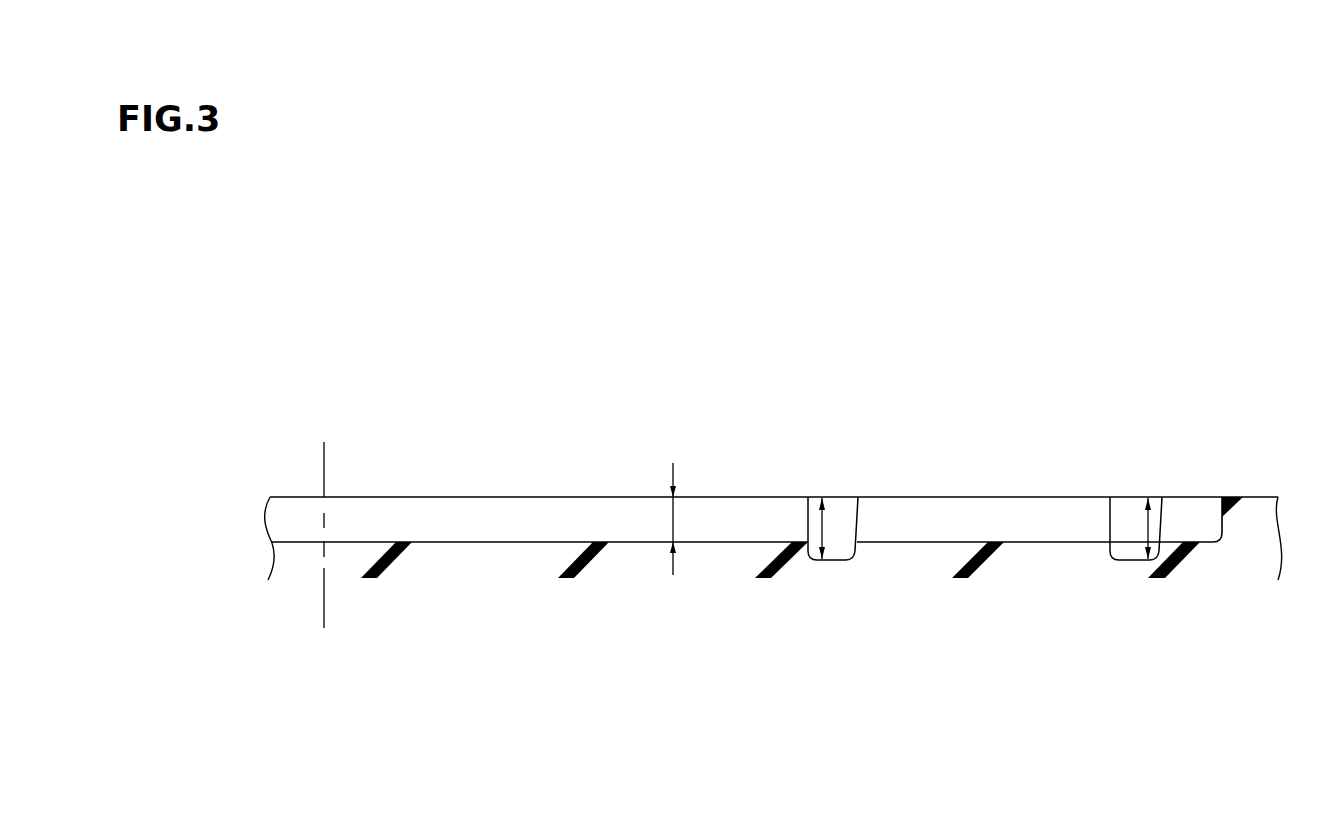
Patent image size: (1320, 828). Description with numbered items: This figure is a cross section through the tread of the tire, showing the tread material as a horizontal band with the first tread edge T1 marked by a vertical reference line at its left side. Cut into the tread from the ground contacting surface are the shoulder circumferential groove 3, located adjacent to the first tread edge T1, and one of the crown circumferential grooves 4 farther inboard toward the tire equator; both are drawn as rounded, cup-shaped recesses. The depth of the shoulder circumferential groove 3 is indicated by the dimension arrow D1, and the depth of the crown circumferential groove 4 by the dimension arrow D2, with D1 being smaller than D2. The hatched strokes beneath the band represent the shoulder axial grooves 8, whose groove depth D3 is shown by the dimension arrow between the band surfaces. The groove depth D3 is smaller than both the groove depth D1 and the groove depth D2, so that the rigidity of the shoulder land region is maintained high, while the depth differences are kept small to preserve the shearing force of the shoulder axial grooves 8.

The shoulder axial groove 8 is at (563, 520).
The shoulder circumferential groove 3 is at (840, 523).
The crown circumferential groove 4 is at (1128, 520).
The first tread edge T1 is at (322, 468).
The groove depth of shoulder axial groove D3 is at (672, 522).
The groove depth of shoulder circumferential groove D1 is at (824, 527).
The groove depth of crown circumferential groove D2 is at (1144, 522).